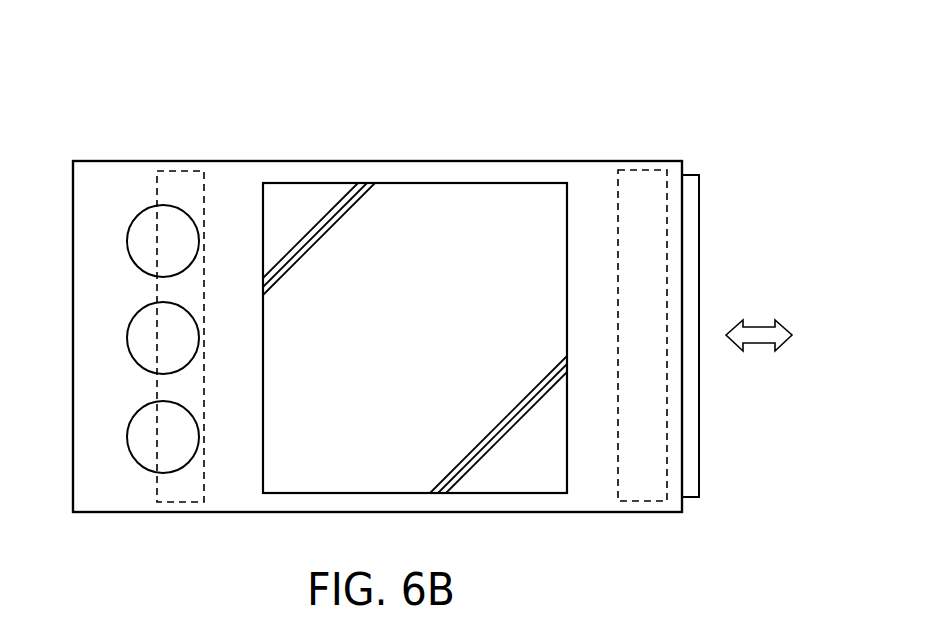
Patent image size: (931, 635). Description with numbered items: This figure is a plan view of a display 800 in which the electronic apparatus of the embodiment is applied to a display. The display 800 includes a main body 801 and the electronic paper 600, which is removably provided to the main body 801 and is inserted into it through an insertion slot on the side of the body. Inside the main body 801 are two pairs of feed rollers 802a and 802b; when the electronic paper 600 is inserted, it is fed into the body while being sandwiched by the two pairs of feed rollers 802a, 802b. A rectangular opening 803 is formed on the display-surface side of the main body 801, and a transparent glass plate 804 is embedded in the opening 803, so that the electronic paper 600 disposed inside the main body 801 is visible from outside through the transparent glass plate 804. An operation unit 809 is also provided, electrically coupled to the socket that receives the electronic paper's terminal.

The display 800 is at (578, 93).
The main body 801 is at (238, 177).
The electronic paper 600 is at (700, 220).
The operation unit 809 is at (132, 203).
The feed rollers 802a is at (175, 155).
The feed rollers 802b is at (644, 155).
The opening 803 is at (310, 183).
The transparent glass plate 804 is at (432, 188).